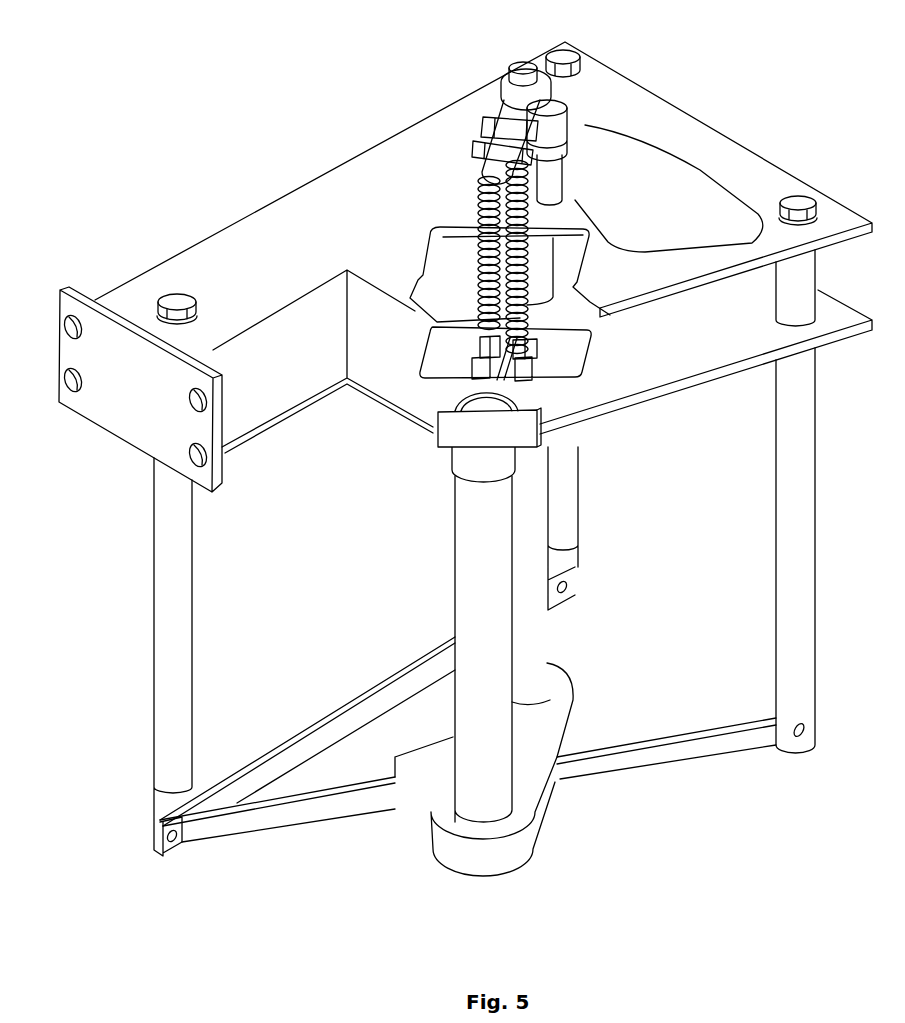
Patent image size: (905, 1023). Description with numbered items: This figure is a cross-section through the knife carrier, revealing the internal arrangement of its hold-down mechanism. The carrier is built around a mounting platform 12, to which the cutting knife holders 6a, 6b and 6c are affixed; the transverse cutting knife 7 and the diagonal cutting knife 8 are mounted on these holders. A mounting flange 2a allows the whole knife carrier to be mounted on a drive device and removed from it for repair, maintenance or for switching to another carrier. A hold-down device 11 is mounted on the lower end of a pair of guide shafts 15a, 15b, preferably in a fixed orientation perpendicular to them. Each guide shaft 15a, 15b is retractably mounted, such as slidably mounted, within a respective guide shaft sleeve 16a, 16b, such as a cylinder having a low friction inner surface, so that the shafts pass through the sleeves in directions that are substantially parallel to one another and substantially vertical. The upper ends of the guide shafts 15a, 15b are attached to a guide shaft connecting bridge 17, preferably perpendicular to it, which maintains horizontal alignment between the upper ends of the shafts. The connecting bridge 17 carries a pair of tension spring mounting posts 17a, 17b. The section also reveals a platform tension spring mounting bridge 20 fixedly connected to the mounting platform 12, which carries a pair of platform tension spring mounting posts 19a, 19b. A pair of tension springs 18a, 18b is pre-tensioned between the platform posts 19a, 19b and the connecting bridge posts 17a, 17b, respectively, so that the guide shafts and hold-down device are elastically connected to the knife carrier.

The mounting flange 2a is at (55, 305).
The mounting platform 12 is at (271, 205).
The cutting knife holder 6a is at (150, 684).
The cutting knife holder 6b is at (580, 513).
The cutting knife holder 6c is at (770, 673).
The transverse cutting knife 7 is at (320, 721).
The diagonal cutting knife 8 is at (338, 821).
The hold-down device 11 is at (580, 703).
The guide shaft 15a is at (583, 75).
The guide shaft 15b is at (453, 535).
The guide shaft sleeve 16a is at (553, 172).
The guide shaft sleeve 16b is at (452, 450).
The guide shaft connecting bridge 17 is at (497, 76).
The tension spring mounting post 17a is at (480, 122).
The tension spring mounting post 17b is at (472, 146).
The tension spring 18a is at (531, 222).
The tension spring 18b is at (478, 207).
The platform tension spring mounting post 19a is at (533, 345).
The platform tension spring mounting post 19b is at (520, 376).
The platform tension spring mounting bridge 20 is at (493, 379).